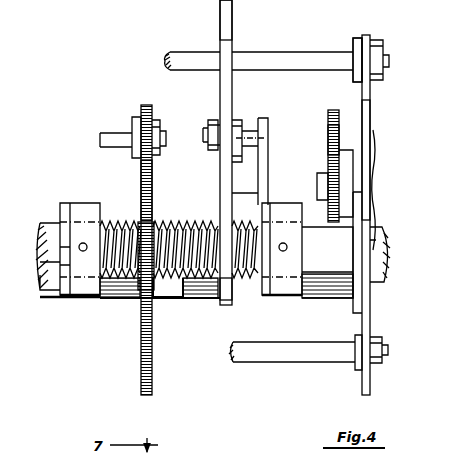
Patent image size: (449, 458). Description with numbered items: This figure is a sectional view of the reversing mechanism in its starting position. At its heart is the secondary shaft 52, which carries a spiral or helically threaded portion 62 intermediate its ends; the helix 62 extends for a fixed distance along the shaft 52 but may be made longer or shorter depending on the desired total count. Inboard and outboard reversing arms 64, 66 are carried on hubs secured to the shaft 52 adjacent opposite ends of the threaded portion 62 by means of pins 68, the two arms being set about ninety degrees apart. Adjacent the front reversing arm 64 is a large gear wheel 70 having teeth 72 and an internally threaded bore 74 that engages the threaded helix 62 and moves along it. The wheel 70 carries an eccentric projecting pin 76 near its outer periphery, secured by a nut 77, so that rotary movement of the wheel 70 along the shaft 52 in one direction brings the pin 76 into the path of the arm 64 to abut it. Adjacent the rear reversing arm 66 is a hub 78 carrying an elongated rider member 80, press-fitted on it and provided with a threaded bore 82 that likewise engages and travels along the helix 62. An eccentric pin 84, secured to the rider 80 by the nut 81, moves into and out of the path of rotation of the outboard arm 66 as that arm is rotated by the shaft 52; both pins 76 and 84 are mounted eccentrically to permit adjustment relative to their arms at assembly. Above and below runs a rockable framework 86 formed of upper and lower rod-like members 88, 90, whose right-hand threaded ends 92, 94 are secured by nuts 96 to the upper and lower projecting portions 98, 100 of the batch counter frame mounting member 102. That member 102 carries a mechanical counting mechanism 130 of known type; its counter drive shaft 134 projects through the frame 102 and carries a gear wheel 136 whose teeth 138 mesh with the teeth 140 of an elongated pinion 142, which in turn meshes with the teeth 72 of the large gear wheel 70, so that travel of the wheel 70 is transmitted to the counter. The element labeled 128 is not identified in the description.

The secondary shaft 52 is at (388, 268).
The helically threaded portion 62 is at (200, 222).
The inboard reversing arm 64 is at (50, 292).
The outboard reversing arm 66 is at (269, 157).
The pins 68 is at (84, 242).
The large gear wheel 70 is at (139, 186).
The teeth 72 is at (143, 106).
The internally threaded bore 74 is at (172, 292).
The eccentric projecting pin 76 is at (105, 136).
The nut 77 is at (161, 152).
The hub 78 is at (245, 300).
The rider member 80 is at (233, 102).
The nut 81 is at (213, 127).
The threaded bore 82 is at (230, 300).
The eccentric pin 84 is at (250, 137).
The rockable framework 86 is at (351, 46).
The upper rod-like member 88 is at (261, 60).
The lower rod-like member 90 is at (276, 363).
The threaded end 92 is at (390, 61).
The threaded end 94 is at (386, 352).
The nuts 96 is at (380, 42).
The upper projecting portion 98 is at (367, 37).
The lower projecting portion 100 is at (361, 386).
The batch counter frame mounting member 102 is at (363, 160).
The plate 128 is at (221, 32).
The mechanical counting mechanism 130 is at (375, 200).
The counter drive shaft 134 is at (348, 202).
The gear wheel 136 is at (335, 110).
The teeth 138 is at (334, 138).
The teeth 140 is at (326, 292).
The elongated pinion 142 is at (118, 301).